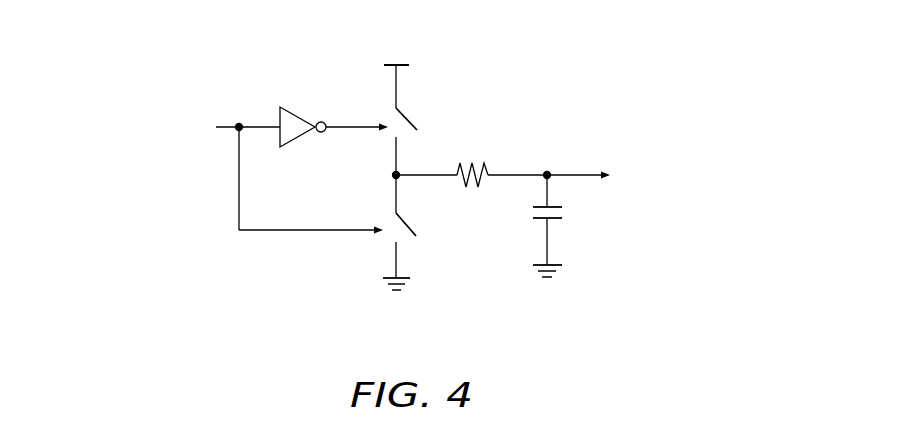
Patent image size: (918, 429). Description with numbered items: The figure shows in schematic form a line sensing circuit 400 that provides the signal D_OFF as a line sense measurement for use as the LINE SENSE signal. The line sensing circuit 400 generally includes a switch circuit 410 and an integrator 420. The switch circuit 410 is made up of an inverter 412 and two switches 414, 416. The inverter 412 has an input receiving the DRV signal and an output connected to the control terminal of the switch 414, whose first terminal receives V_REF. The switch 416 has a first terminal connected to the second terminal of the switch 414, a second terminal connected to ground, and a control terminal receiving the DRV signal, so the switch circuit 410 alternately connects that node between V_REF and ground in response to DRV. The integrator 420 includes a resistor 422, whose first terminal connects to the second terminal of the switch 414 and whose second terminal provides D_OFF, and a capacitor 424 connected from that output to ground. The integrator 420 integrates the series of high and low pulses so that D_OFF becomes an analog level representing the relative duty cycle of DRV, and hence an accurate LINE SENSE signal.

The line sensing circuit 400 is at (116, 39).
The switch circuit 410 is at (269, 50).
The inverter 412 is at (297, 113).
The switch 414 is at (407, 117).
The switch 416 is at (410, 225).
The integrator 420 is at (551, 115).
The resistor 422 is at (467, 162).
The capacitor 424 is at (537, 218).